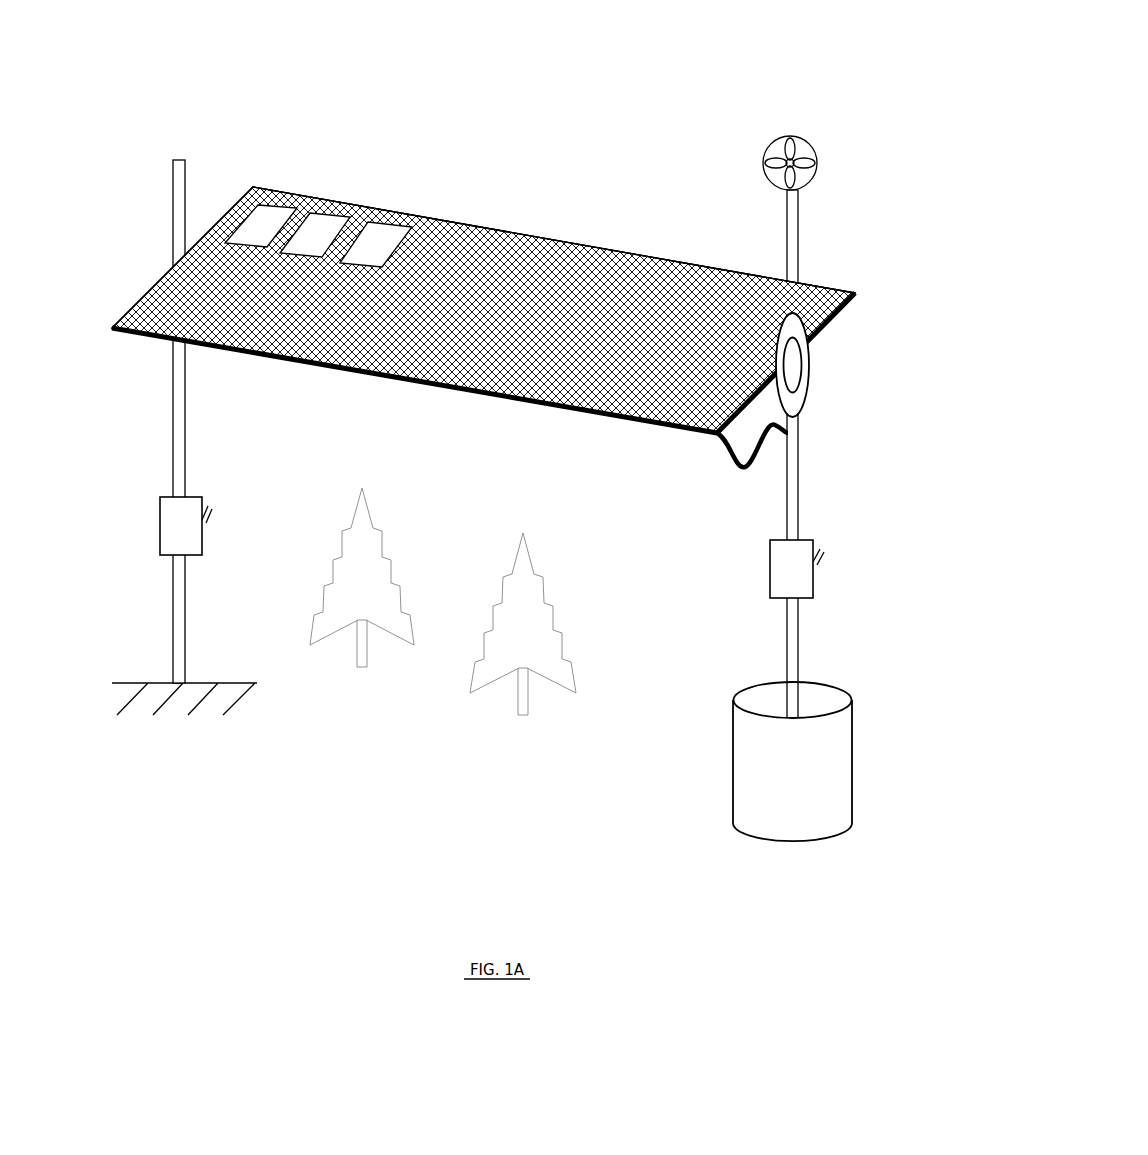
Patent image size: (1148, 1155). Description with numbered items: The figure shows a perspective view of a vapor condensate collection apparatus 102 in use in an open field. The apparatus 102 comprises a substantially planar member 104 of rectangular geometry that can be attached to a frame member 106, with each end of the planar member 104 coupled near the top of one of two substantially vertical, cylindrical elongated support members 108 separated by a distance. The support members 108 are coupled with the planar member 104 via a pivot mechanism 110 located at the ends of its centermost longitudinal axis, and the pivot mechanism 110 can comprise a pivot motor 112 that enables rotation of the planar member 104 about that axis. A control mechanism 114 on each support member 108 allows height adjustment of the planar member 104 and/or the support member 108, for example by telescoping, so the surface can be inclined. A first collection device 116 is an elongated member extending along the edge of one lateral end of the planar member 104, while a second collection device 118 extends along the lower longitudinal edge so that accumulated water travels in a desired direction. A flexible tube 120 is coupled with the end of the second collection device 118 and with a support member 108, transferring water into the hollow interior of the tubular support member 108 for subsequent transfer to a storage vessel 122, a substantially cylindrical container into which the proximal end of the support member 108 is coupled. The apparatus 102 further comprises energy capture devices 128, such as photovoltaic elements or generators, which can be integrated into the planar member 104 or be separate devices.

The vapor condensate collection apparatus 102 is at (533, 225).
The substantially planar member 104 is at (551, 264).
The frame member 106 is at (446, 221).
The elongated support member 108 is at (167, 218).
The pivot mechanism 110 is at (807, 402).
The pivot motor 112 is at (785, 375).
The control mechanism 114 is at (145, 520).
The first collection device 116 is at (837, 325).
The second collection device 118 is at (482, 402).
The flexible tube 120 is at (725, 460).
The storage vessel 122 is at (732, 788).
The energy capture device 128 is at (392, 240).